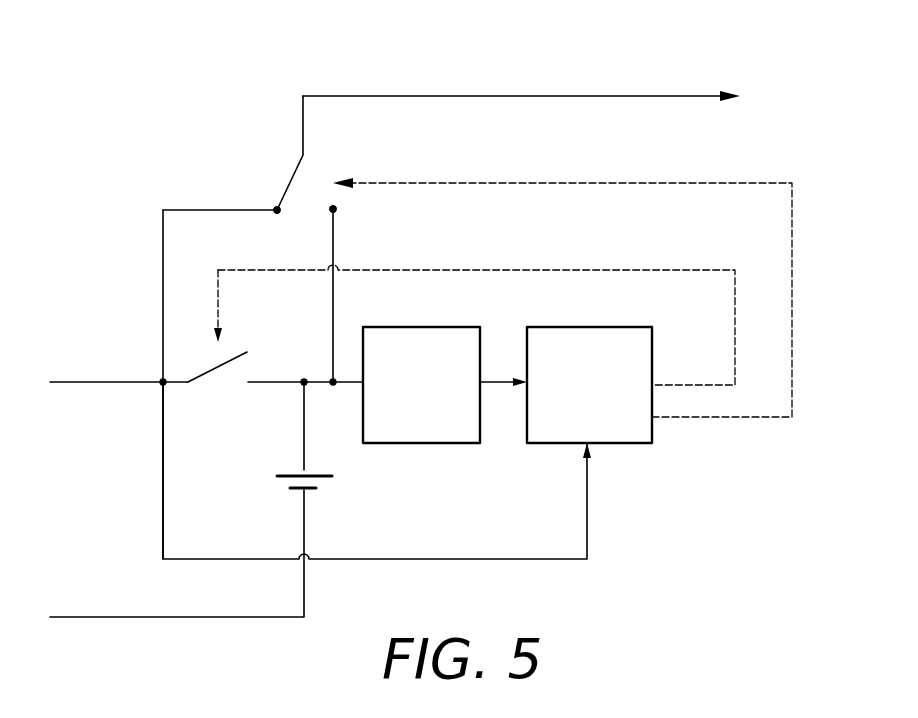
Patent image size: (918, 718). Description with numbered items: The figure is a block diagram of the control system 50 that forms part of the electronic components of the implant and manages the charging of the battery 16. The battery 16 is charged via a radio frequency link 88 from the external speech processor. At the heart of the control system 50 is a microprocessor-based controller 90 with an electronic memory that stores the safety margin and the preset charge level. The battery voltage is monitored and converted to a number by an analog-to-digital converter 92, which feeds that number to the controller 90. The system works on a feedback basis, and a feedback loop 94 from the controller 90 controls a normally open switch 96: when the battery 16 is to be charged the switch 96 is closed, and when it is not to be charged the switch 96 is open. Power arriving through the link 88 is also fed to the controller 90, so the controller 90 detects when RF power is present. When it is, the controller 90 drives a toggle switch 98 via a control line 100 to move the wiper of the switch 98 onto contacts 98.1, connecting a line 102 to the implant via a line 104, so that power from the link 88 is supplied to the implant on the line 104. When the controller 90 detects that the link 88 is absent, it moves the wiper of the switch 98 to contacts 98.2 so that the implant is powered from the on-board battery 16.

The battery 16 is at (352, 490).
The control system 50 is at (773, 147).
The radio frequency link 88 is at (120, 483).
The controller 90 is at (589, 385).
The analog-to-digital converter 92 is at (421, 385).
The feedback loop 94 is at (532, 270).
The normally open switch 96 is at (216, 370).
The toggle switch 98 is at (292, 182).
The contacts 98.1 is at (277, 212).
The contacts 98.2 is at (333, 209).
The control line 100 is at (523, 183).
The line 102 is at (162, 312).
The line 104 is at (533, 96).